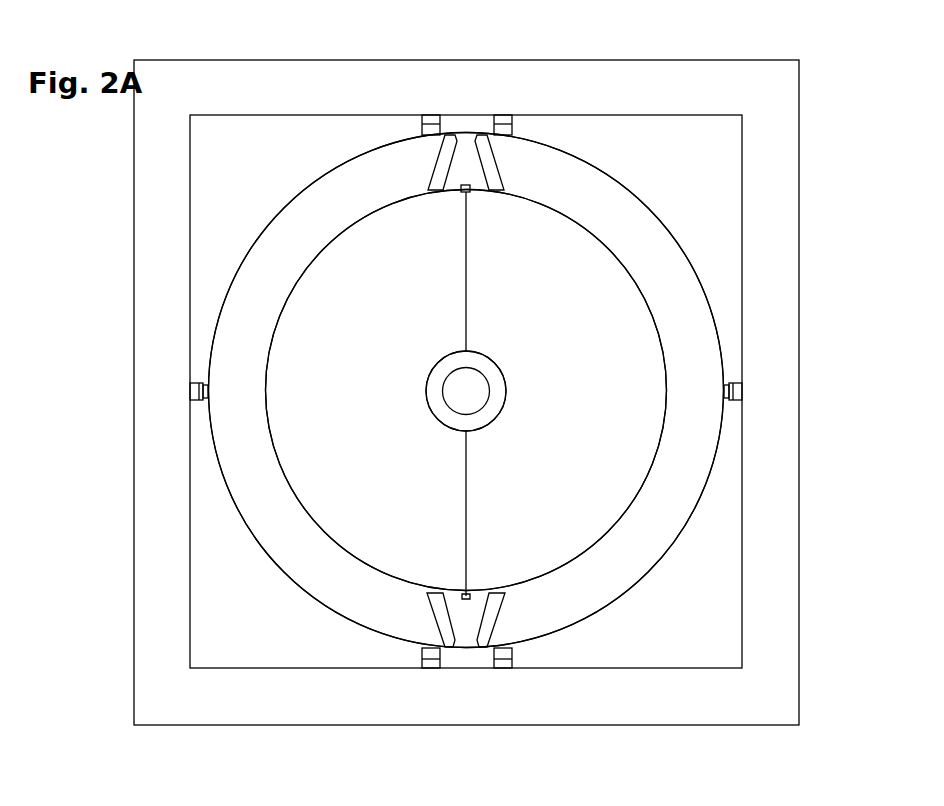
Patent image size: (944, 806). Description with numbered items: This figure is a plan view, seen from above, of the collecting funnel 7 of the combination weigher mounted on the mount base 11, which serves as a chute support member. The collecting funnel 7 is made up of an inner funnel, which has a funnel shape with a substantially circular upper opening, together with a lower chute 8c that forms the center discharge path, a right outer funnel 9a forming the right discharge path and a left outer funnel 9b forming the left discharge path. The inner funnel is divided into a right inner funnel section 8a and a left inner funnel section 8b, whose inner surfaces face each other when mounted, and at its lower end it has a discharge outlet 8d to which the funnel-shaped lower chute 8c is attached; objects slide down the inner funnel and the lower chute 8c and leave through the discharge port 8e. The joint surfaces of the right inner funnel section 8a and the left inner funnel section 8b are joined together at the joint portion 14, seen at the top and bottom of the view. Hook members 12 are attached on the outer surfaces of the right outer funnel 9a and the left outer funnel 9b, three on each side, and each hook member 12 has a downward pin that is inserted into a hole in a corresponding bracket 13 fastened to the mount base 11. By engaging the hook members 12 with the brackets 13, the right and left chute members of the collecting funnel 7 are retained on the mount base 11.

The collecting funnel 7 is at (652, 203).
The mount base 11 is at (799, 207).
The right outer funnel 9a is at (712, 312).
The left outer funnel 9b is at (223, 312).
The right inner funnel section 8a is at (656, 461).
The left inner funnel section 8b is at (273, 460).
The lower chute 8c is at (490, 412).
The discharge outlet 8d is at (478, 432).
The discharge port 8e is at (455, 412).
The hook member 12 is at (425, 135).
The bracket 13 is at (422, 120).
The joint portion 14 is at (466, 185).